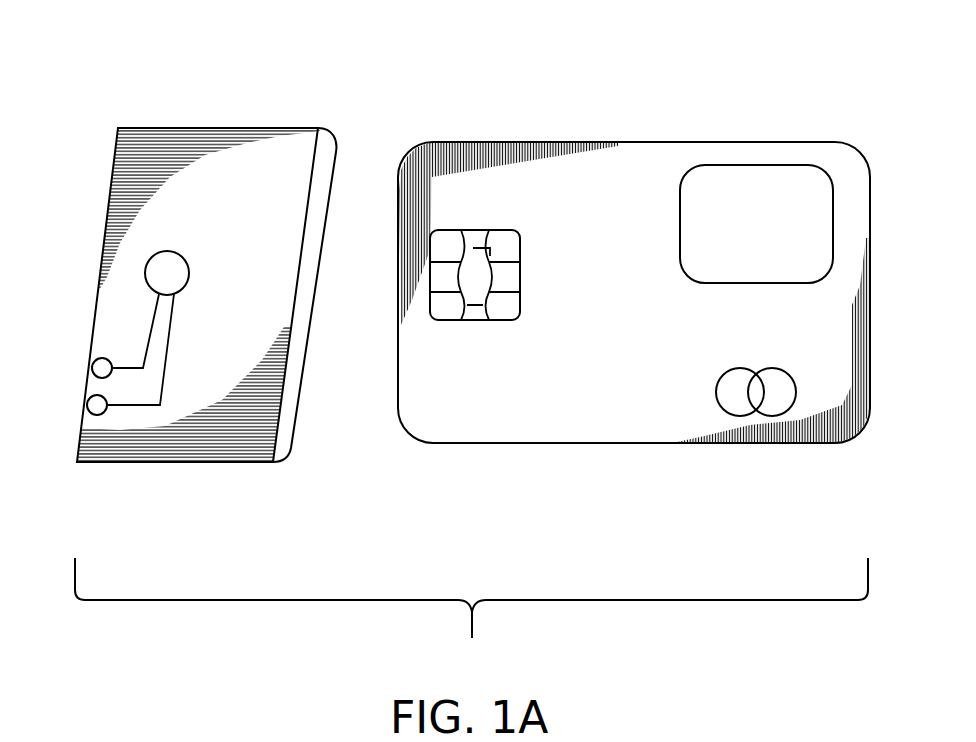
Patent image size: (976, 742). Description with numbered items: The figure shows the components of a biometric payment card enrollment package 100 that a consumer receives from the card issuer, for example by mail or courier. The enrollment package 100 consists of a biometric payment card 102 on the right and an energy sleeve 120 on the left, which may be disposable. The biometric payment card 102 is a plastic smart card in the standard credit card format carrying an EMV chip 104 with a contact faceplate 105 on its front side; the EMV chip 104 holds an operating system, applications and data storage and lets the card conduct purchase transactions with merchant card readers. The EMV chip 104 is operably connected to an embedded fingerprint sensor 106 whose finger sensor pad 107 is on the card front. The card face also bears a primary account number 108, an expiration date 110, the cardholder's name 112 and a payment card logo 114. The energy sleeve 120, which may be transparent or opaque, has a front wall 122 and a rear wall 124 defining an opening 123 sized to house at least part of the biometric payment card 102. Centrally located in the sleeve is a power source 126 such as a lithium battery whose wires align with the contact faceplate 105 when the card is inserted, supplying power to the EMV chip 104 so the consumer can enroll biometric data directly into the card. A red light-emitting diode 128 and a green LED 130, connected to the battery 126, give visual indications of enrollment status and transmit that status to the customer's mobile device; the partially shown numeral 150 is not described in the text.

The biometric payment card enrollment package 100 is at (471, 616).
The biometric payment card 102 is at (660, 120).
The EMV chip 104 is at (452, 220).
The contact faceplate 105 is at (503, 243).
The fingerprint sensor 106 is at (777, 165).
The finger sensor pad 107 is at (807, 218).
The primary account number 108 is at (667, 340).
The expiration date 110 is at (416, 396).
The cardholder's name 112 is at (418, 433).
The payment card logo 114 is at (760, 438).
The energy sleeve 120 is at (237, 106).
The front wall 122 is at (147, 128).
The opening 123 is at (318, 188).
The rear wall 124 is at (300, 298).
The power source 126 is at (167, 265).
The red light-emitting diode 128 is at (98, 352).
The green LED 130 is at (77, 425).
The mobile device 150 is at (765, 737).